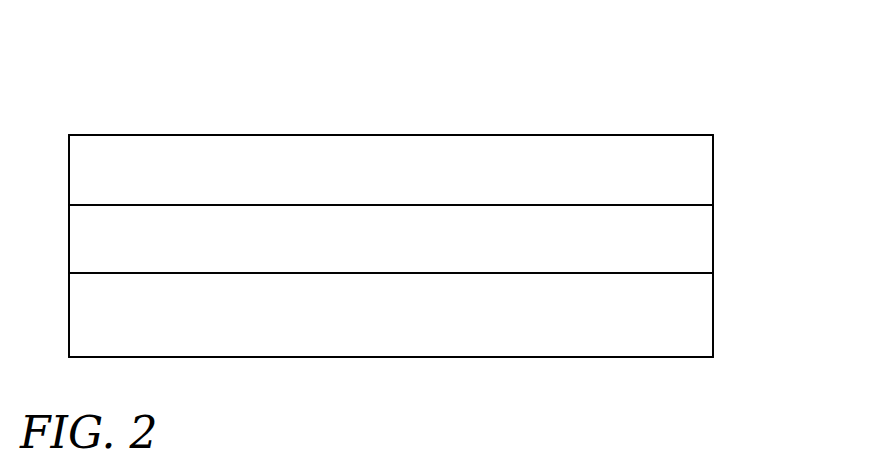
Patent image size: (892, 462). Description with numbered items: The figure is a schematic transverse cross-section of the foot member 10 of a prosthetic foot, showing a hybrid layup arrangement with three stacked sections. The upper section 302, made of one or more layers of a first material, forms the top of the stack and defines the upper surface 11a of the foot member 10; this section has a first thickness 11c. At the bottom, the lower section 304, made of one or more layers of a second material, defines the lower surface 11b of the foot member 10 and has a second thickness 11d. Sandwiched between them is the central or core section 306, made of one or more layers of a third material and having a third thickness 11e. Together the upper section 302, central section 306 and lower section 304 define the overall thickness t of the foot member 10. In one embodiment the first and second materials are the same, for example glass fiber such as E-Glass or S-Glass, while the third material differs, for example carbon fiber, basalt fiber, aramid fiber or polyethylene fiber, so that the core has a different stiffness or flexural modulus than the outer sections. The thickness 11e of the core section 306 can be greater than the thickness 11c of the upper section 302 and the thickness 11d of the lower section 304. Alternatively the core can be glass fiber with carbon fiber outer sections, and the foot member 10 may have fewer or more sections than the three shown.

The foot member 10 is at (700, 56).
The upper surface 11a is at (492, 135).
The lower surface 11b is at (532, 357).
The first thickness 11c is at (719, 136).
The second thickness 11d is at (719, 274).
The third thickness 11e is at (719, 206).
The upper section 302 is at (396, 184).
The lower section 304 is at (396, 323).
The central section 306 is at (396, 250).
The thickness t is at (57, 128).